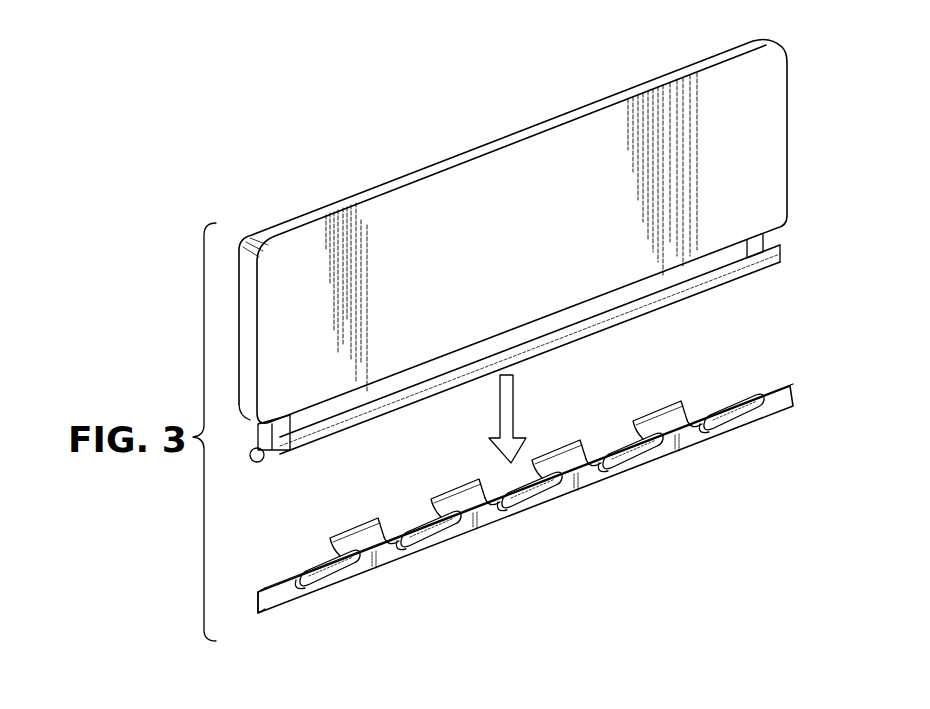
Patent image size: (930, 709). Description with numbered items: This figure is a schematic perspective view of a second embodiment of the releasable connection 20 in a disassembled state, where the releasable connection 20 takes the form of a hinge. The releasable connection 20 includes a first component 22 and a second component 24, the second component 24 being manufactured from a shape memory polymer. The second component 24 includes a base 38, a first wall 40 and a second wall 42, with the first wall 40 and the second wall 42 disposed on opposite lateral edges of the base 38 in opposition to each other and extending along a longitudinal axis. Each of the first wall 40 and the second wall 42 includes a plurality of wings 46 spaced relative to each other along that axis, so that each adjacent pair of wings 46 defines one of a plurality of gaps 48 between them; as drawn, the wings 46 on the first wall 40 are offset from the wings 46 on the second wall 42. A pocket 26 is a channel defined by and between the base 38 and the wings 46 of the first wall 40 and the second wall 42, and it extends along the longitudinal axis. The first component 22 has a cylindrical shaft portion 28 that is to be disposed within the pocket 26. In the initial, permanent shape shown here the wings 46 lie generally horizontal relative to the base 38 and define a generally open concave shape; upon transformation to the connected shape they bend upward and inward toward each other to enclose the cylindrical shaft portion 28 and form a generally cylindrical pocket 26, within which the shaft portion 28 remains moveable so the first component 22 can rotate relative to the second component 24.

The releasable connection 20 is at (784, 334).
The first component 22 is at (506, 137).
The second component 24 is at (572, 497).
The pocket 26 is at (384, 532).
The cylindrical shaft portion 28 is at (637, 318).
The base 38 is at (258, 607).
The first wall 40 is at (357, 525).
The second wall 42 is at (337, 573).
The wings 46 is at (557, 450).
The gaps 48 is at (632, 418).